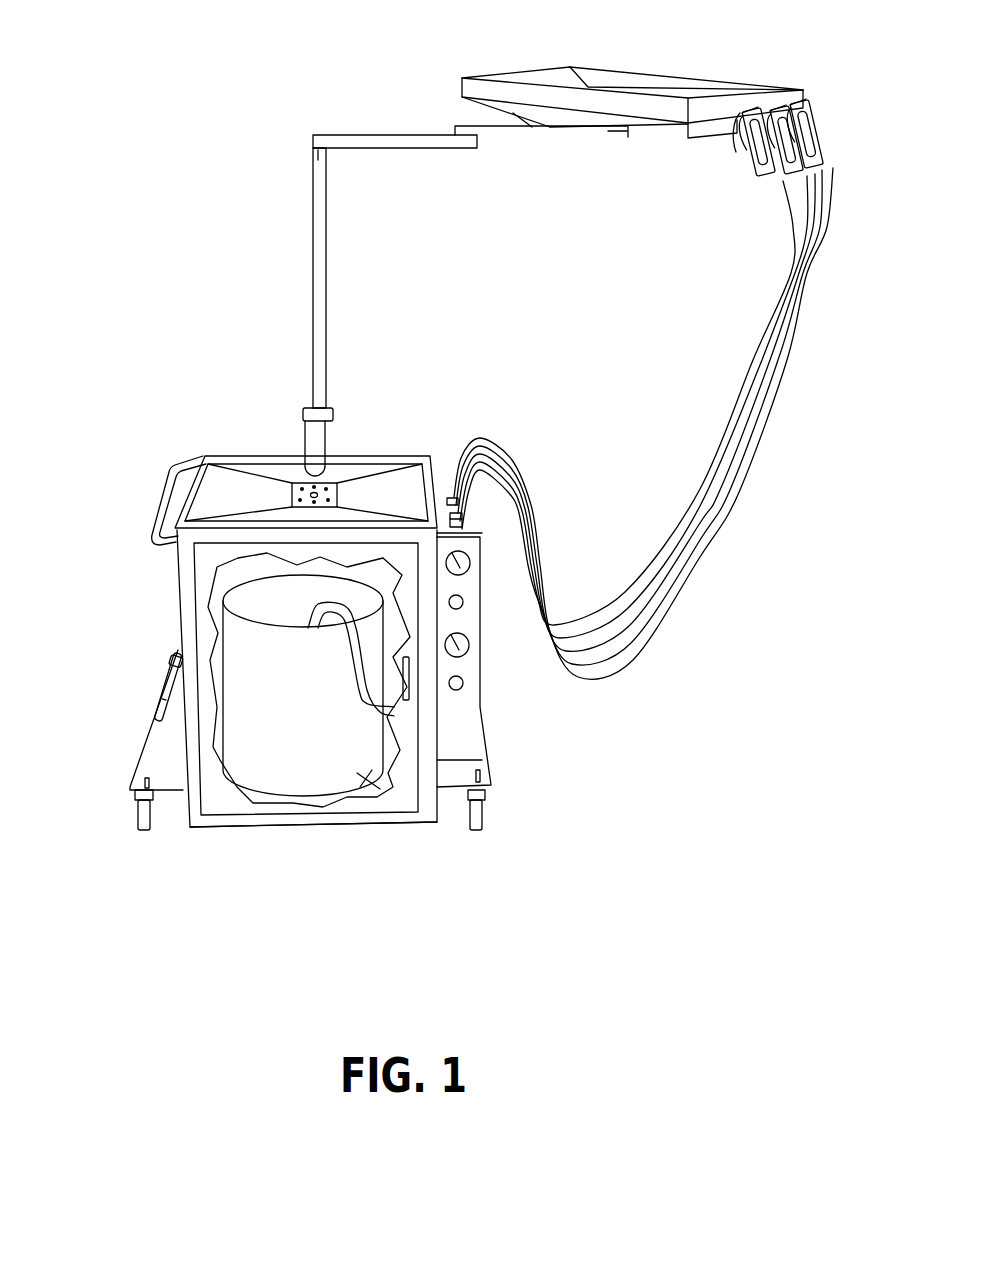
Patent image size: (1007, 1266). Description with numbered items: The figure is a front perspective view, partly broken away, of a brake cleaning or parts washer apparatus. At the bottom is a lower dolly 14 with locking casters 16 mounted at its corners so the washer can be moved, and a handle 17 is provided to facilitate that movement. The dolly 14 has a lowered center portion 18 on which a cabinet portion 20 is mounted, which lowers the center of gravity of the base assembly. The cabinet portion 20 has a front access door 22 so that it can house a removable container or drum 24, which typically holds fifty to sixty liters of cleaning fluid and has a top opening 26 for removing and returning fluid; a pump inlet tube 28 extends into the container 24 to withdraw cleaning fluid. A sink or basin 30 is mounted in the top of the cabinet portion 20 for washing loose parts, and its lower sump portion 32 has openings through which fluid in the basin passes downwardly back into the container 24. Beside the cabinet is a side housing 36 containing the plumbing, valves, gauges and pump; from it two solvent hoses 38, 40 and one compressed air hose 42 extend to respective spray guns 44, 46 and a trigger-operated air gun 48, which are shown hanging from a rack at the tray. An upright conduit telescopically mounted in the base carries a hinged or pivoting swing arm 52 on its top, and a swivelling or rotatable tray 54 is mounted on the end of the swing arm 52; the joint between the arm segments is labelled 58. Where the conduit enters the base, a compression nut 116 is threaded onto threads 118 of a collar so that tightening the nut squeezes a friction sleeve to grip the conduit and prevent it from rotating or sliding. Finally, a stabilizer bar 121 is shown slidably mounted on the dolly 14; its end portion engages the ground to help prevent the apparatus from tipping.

The lower dolly 14 is at (140, 755).
The locking casters 16 is at (137, 830).
The handle 17 is at (162, 505).
The lowered center portion 18 is at (334, 822).
The cabinet portion 20 is at (118, 552).
The front access door 22 is at (222, 807).
The removable container or drum 24 is at (382, 793).
The top opening 26 is at (227, 597).
The pump inlet tube 28 is at (356, 680).
The sink or basin 30 is at (373, 493).
The lower sump portion 32 is at (300, 493).
The side housing 36 is at (470, 642).
The solvent hose 38 is at (815, 208).
The solvent hose 40 is at (835, 189).
The compressed air hose 42 is at (790, 227).
The spray gun 44 is at (800, 157).
The spray gun 46 is at (808, 110).
The air gun 48 is at (734, 163).
The swing arm 52 is at (370, 135).
The tray 54 is at (603, 77).
The arm joint 58 is at (329, 150).
The compression nut 116 is at (302, 415).
The threads 118 is at (327, 444).
The stabilizer bars 121 is at (173, 652).